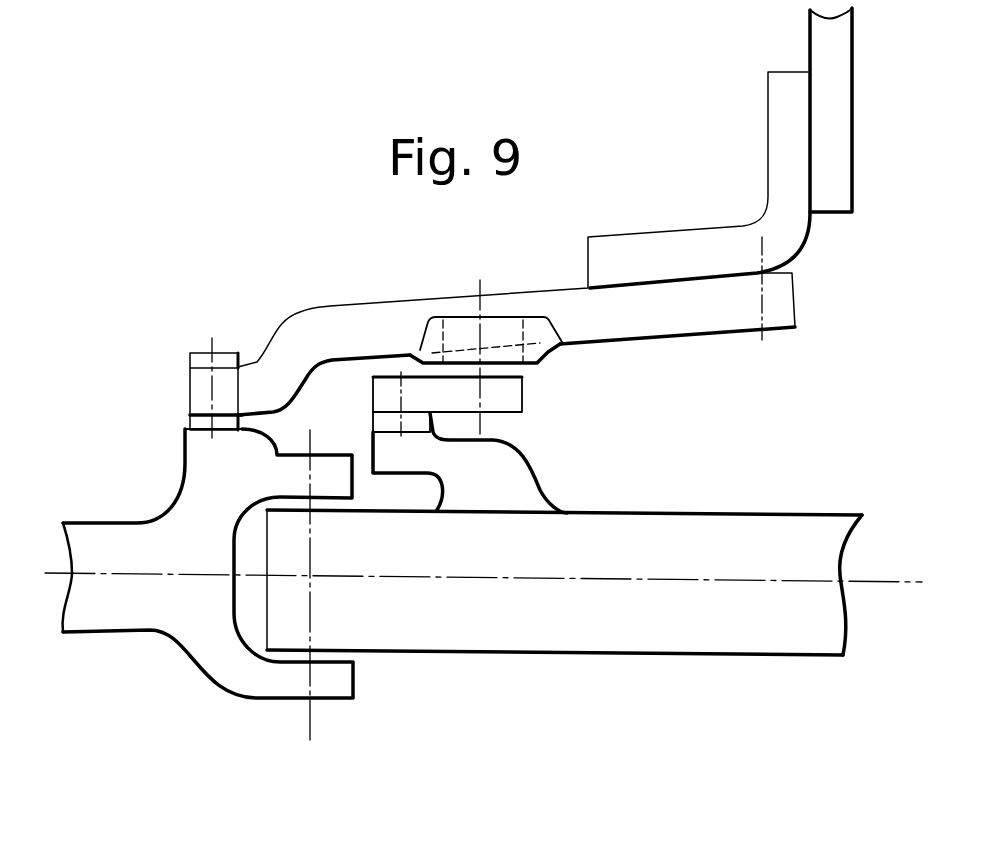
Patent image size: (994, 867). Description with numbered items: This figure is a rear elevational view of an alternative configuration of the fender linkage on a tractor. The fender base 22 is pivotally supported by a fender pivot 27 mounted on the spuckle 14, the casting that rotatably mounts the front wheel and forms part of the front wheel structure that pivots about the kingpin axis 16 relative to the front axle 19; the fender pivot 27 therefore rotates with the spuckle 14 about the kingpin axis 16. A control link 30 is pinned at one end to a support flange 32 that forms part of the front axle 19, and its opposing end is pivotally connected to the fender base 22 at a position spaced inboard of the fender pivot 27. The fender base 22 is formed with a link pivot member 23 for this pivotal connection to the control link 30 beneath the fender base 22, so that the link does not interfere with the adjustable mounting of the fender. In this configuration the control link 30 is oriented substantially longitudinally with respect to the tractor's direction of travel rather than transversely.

The spuckle 14 is at (200, 465).
The kingpin axis 16 is at (311, 713).
The front axle 19 is at (737, 527).
The fender base 22 is at (663, 315).
The link pivot member 23 is at (543, 350).
The fender pivot 27 is at (203, 388).
The control link 30 is at (397, 393).
The support flange 32 is at (513, 480).